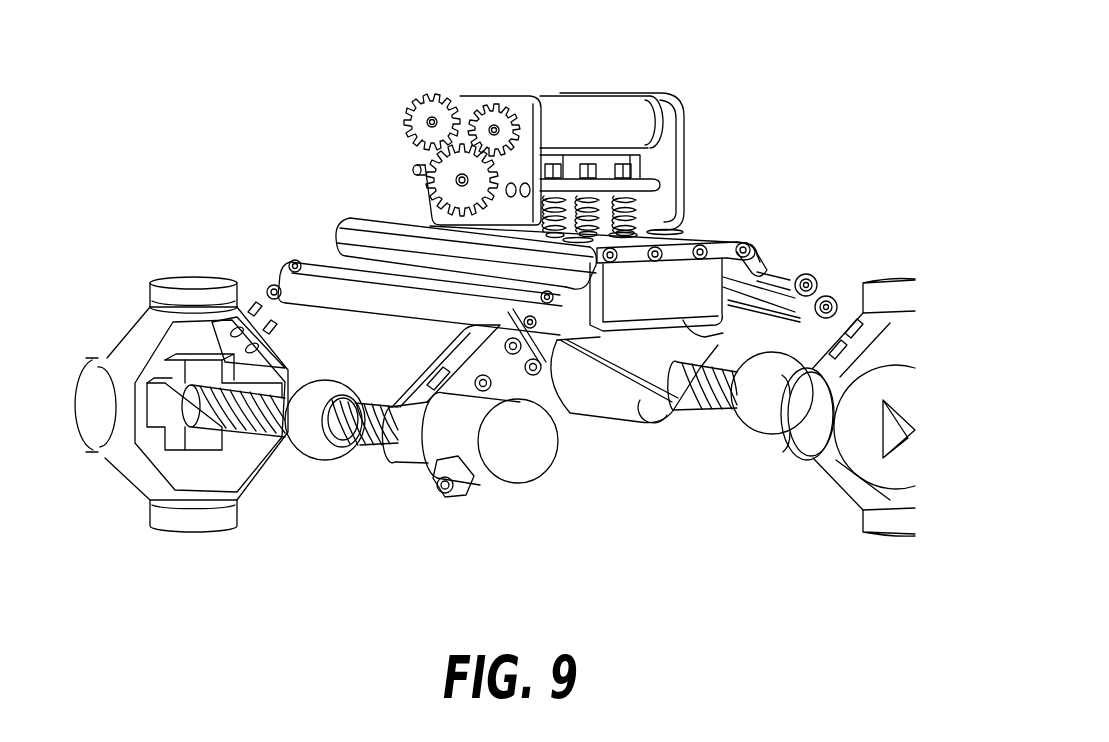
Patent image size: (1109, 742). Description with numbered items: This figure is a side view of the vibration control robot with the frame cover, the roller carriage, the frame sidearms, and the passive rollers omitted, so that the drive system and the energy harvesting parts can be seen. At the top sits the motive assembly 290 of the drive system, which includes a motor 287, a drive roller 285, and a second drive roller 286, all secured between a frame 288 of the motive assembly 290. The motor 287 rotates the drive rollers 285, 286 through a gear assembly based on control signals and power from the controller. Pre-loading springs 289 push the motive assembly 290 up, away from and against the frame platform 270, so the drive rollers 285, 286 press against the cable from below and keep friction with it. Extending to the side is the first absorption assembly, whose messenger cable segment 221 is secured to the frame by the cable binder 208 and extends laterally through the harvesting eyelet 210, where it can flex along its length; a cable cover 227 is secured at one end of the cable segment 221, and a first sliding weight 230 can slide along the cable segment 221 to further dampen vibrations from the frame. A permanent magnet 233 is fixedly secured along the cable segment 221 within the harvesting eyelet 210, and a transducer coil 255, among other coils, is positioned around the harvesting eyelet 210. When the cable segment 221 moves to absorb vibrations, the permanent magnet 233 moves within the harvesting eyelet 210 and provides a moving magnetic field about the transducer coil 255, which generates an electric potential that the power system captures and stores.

The cable binder 208 is at (408, 450).
The harvesting eyelet 210 is at (252, 480).
The messenger cable segment 221 is at (372, 448).
The cable cover 227 is at (527, 466).
The first sliding weight 230 is at (315, 452).
The permanent magnet 233 is at (173, 370).
The transducer coil 255 is at (96, 445).
The frame platform 270 is at (762, 266).
The drive roller 285 is at (548, 96).
The drive roller 286 is at (636, 103).
The motor 287 is at (650, 160).
The frame 288 is at (670, 104).
The pre-loading springs 289 is at (640, 215).
The motive assembly 290 is at (722, 143).